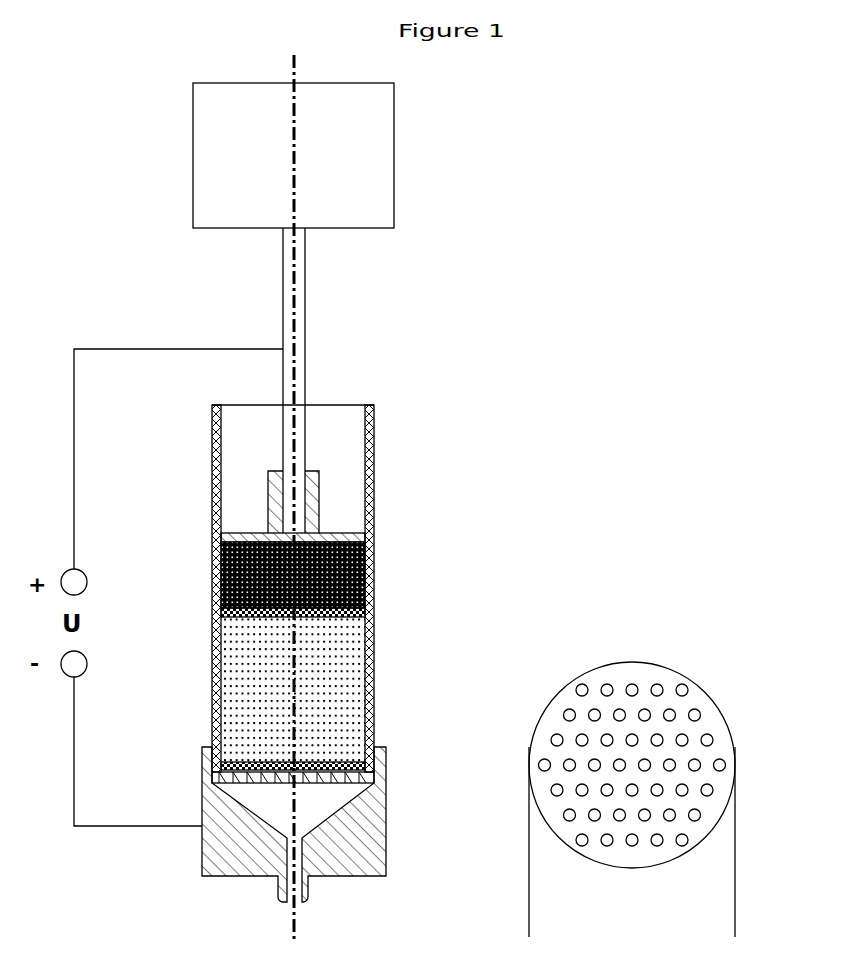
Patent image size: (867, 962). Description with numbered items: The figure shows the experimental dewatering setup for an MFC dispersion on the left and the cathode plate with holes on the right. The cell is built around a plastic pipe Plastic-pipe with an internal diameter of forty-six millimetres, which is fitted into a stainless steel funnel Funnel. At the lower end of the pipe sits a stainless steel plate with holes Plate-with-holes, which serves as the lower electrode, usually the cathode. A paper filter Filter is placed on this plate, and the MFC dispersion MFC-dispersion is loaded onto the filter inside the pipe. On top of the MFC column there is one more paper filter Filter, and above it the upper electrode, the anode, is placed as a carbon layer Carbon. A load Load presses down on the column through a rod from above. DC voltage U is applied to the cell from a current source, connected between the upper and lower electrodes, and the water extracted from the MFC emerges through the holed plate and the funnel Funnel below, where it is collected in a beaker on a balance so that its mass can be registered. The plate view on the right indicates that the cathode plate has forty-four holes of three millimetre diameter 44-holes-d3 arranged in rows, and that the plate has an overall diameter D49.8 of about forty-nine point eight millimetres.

The load Load is at (379, 155).
The plastic pipe Plastic-pipe is at (374, 477).
The carbon Carbon is at (277, 560).
The paper filter Filter is at (374, 610).
The MFC dispersion MFC-dispersion is at (323, 697).
The plate with holes Plate-with-holes is at (361, 791).
The stainless steel funnel Funnel is at (365, 859).
The holes of the cathode plate 44-holes-d3 is at (688, 690).
The cathode plate diameter D49.8 is at (735, 933).